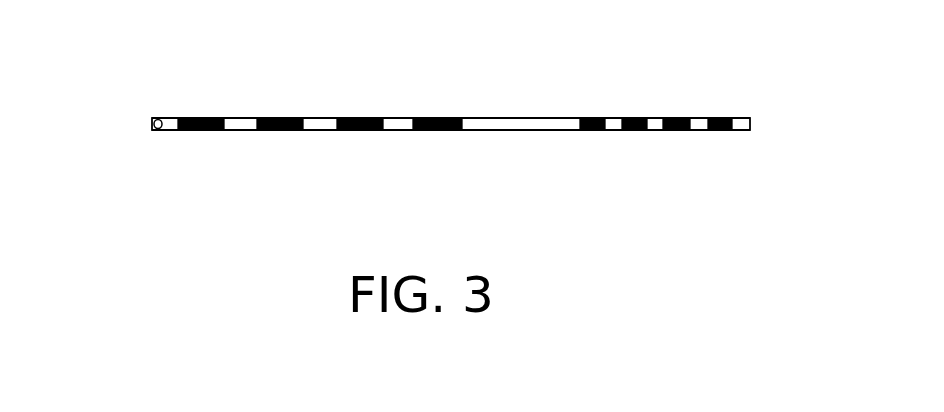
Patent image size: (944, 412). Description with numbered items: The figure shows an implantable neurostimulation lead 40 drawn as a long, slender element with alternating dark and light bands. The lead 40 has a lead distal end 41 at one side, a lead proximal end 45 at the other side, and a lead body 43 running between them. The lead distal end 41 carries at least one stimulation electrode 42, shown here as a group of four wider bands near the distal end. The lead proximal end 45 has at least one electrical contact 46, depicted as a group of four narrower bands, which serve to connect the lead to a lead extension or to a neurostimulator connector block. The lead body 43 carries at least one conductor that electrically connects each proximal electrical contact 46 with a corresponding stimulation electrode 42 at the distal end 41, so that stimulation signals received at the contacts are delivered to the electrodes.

The implantable neurostimulation lead 40 is at (498, 88).
The lead distal end 41 is at (175, 170).
The stimulation electrode 42 is at (426, 109).
The lead body 43 is at (525, 147).
The lead proximal end 45 is at (728, 161).
The electrical contact 46 is at (595, 108).